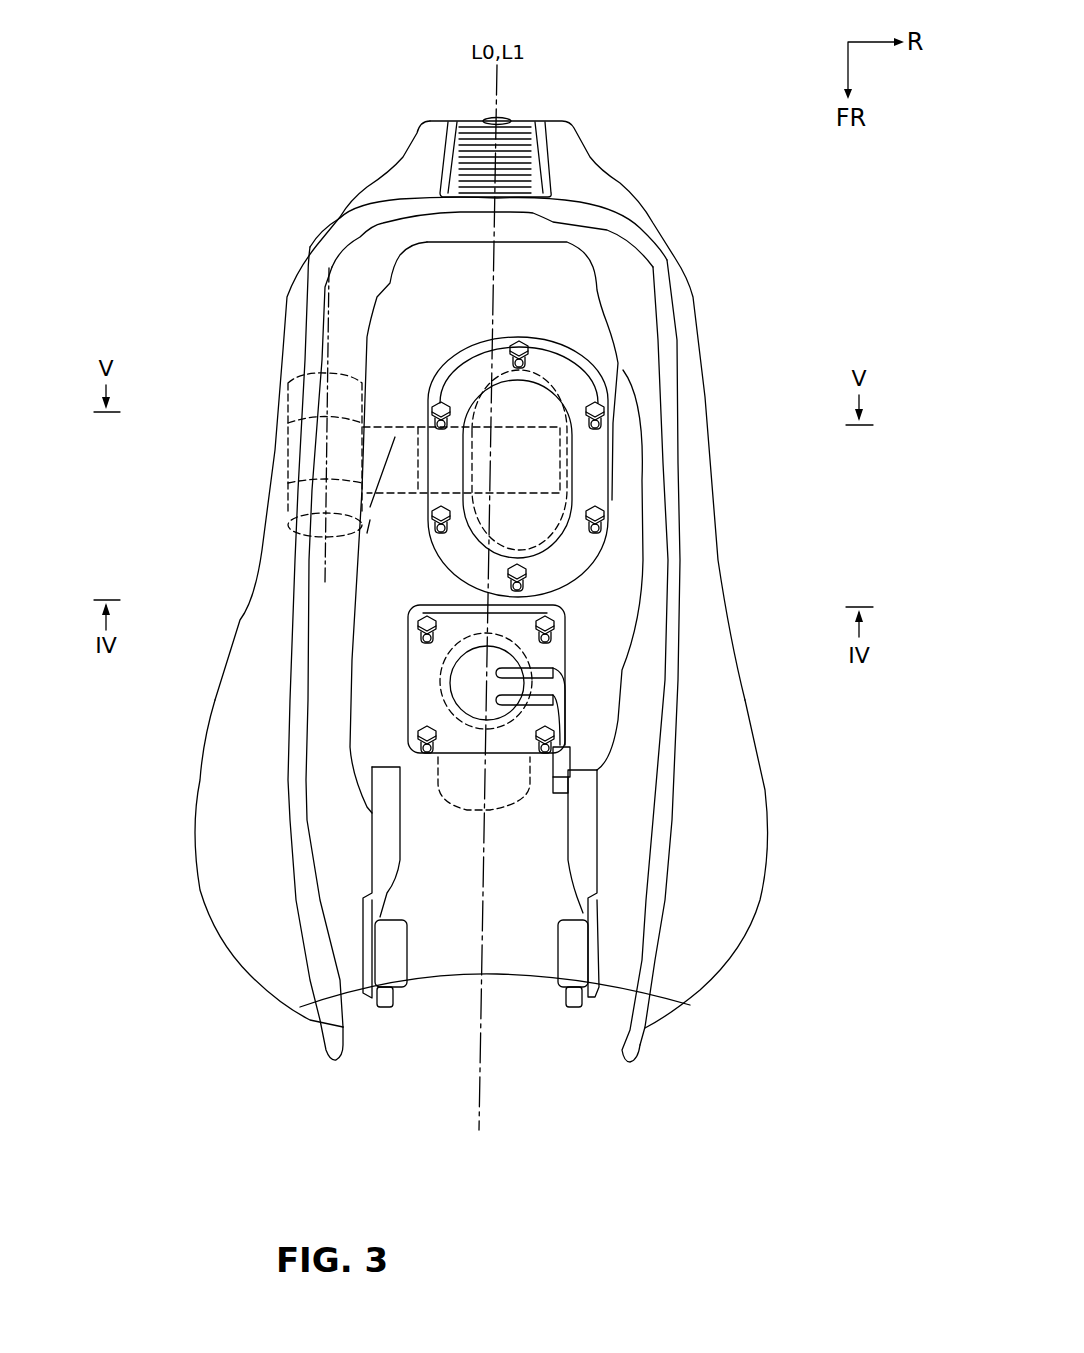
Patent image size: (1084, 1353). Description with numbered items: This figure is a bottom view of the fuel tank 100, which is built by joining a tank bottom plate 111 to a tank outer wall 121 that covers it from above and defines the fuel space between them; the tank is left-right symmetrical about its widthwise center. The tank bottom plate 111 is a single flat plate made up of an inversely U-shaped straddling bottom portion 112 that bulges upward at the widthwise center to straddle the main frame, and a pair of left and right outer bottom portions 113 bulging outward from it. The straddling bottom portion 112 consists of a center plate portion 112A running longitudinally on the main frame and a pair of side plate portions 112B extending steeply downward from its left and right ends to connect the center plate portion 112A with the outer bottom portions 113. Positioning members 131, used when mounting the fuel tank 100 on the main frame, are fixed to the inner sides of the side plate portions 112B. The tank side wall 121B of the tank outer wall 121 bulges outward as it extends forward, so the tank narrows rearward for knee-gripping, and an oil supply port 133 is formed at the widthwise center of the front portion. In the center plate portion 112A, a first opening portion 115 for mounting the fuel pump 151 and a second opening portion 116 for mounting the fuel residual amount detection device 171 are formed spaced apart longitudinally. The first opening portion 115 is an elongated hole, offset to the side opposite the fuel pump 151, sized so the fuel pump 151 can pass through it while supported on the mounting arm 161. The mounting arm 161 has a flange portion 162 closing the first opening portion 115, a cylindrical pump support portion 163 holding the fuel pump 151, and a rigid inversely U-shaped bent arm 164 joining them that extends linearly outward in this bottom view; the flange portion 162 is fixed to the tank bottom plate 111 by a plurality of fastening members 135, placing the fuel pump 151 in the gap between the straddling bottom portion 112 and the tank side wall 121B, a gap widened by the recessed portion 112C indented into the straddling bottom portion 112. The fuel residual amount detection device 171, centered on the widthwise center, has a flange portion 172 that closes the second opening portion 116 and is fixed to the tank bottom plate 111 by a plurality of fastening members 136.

The fuel tank 100 is at (692, 88).
The tank bottom plate 111 is at (435, 967).
The straddling bottom portion 112 is at (426, 751).
The center plate portion 112A is at (517, 960).
The side plate portion 112B is at (348, 993).
The recessed portion 112C is at (378, 458).
The outer bottom portion 113 is at (265, 553).
The first opening portion 115 is at (557, 387).
The second opening portion 116 is at (557, 602).
The tank outer wall 121 is at (682, 254).
The tank side wall 121B is at (210, 795).
The positioning member 131 is at (377, 962).
The oil supply port 133 is at (447, 778).
The fastening member 135 is at (450, 405).
The fastening member 136 is at (533, 633).
The fuel pump 151 is at (288, 370).
The mounting arm 161 is at (410, 418).
The flange portion 162 is at (588, 460).
The pump support portion 163 is at (288, 443).
The bent arm 164 is at (398, 403).
The fuel residual amount detection device 171 is at (681, 725).
The flange portion 172 is at (560, 657).